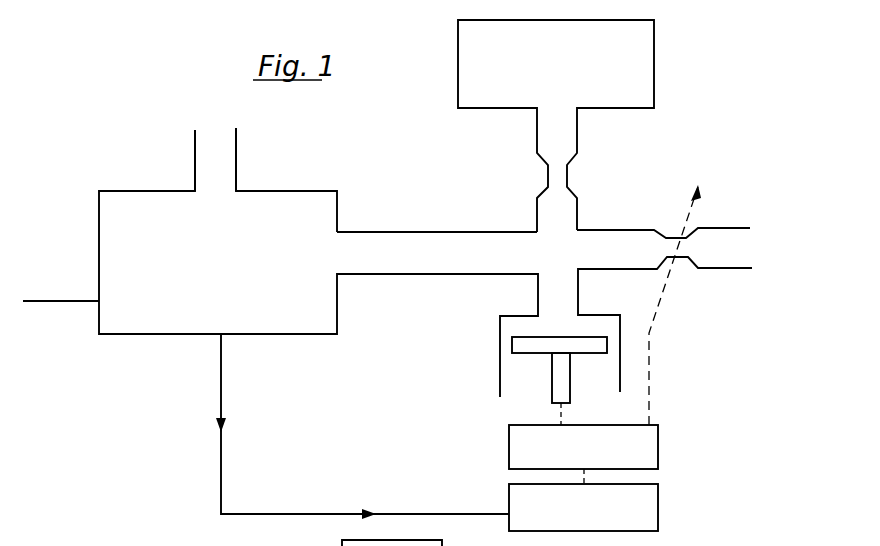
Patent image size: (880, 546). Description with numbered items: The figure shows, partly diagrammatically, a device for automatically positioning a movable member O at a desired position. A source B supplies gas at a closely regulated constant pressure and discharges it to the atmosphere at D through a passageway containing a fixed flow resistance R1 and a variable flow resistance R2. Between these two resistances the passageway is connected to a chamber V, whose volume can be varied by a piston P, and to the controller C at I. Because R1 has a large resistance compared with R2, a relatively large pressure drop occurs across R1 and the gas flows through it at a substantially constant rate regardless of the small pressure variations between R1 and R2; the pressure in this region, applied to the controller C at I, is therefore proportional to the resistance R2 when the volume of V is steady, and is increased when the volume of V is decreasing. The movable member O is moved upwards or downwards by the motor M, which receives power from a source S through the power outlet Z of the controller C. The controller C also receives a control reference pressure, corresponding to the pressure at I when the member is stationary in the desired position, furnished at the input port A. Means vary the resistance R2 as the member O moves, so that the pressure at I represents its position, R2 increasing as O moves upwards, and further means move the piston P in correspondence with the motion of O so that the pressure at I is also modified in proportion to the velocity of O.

The controller C is at (318, 262).
The source of supply of gas B is at (556, 126).
The fixed flow resistance R1 is at (572, 172).
The variable flow resistance R2 is at (668, 228).
The discharge to atmosphere D is at (732, 247).
The power source S is at (61, 313).
The input port A is at (206, 163).
The controller input I is at (337, 233).
The power outlet Z is at (212, 342).
The chamber V is at (510, 325).
The piston P is at (522, 400).
The movable member O is at (583, 447).
The motor M is at (583, 500).